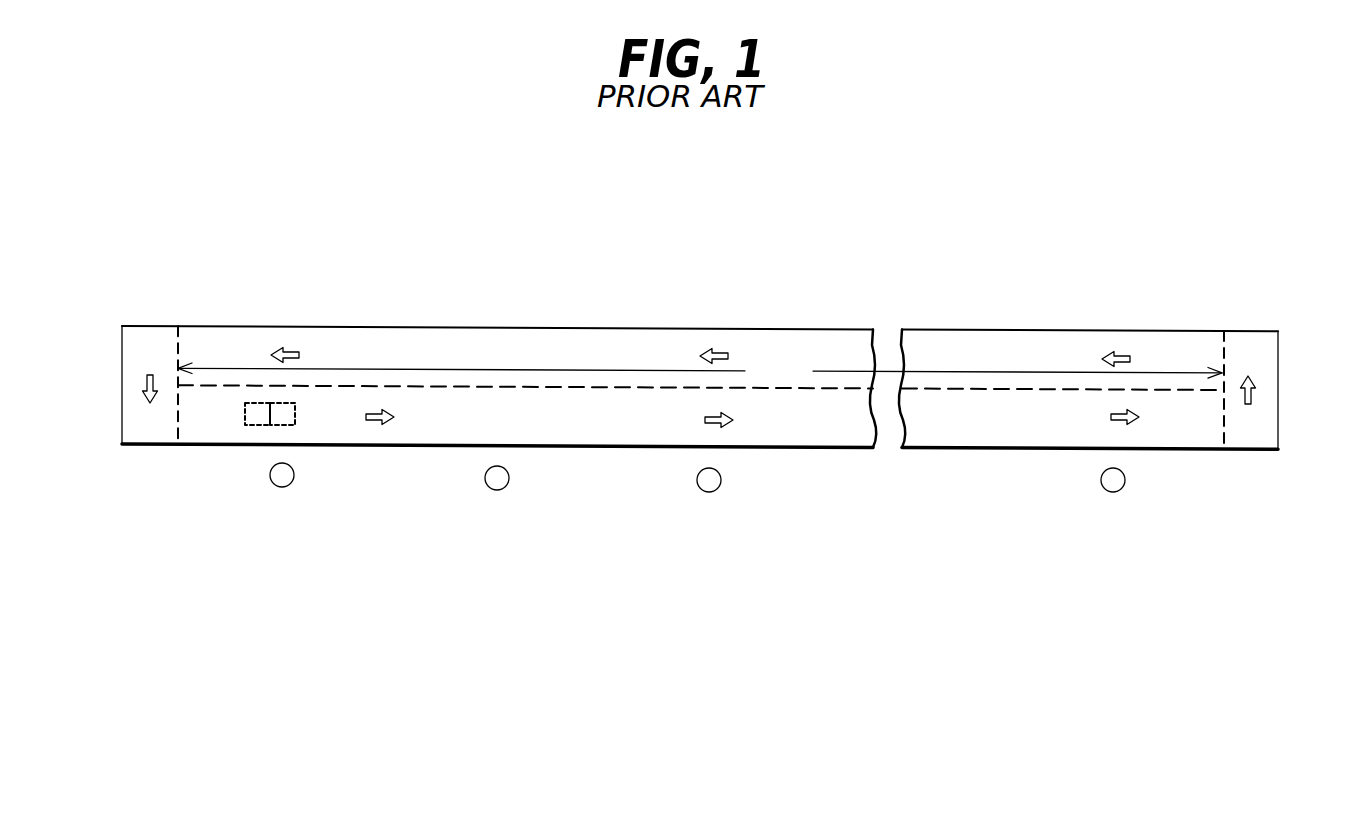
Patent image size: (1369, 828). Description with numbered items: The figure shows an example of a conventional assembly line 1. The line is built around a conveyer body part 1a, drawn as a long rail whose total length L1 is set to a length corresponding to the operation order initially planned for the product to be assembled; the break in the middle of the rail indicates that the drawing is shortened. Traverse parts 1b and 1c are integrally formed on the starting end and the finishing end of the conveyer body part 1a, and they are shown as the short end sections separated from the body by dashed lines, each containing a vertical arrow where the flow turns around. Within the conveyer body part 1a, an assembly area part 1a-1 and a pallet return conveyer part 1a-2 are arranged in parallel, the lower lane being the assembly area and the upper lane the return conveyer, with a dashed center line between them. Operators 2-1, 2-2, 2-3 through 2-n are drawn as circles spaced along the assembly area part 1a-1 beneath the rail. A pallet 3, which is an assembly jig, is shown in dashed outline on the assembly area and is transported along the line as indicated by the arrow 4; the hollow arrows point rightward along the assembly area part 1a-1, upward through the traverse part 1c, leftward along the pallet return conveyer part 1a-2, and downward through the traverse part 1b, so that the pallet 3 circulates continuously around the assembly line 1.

The assembly line 1 is at (1113, 276).
The conveyer body part 1a is at (1220, 302).
The assembly area part 1a-1 is at (781, 436).
The pallet return conveyer part 1a-2 is at (756, 328).
The traverse part 1b is at (182, 312).
The traverse part 1c is at (1283, 316).
The operator 2-1 is at (288, 486).
The operator 2-2 is at (504, 488).
The operator 2-3 is at (716, 490).
The operator 2-n is at (1120, 490).
The pallet 3 is at (245, 418).
The arrow 4 is at (140, 388).
The total length L1 is at (700, 370).